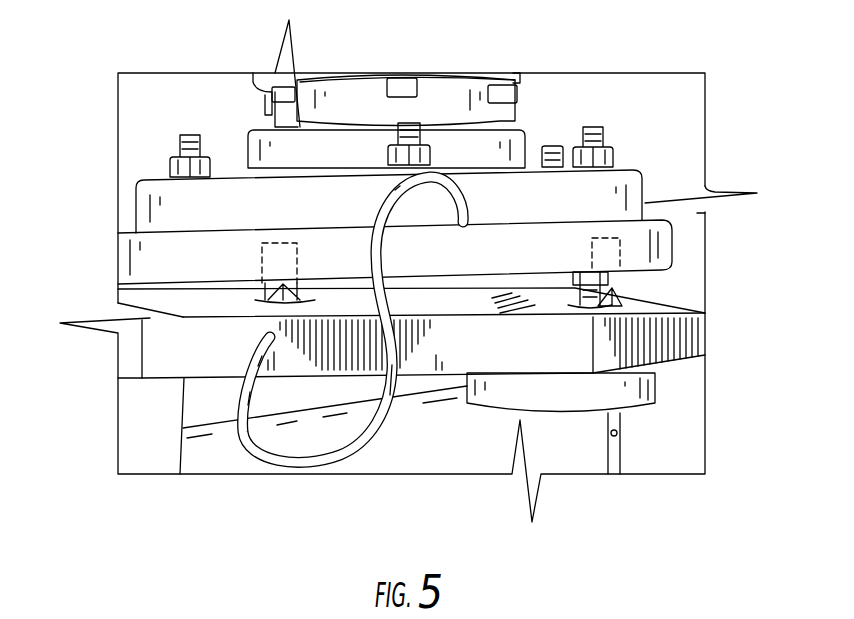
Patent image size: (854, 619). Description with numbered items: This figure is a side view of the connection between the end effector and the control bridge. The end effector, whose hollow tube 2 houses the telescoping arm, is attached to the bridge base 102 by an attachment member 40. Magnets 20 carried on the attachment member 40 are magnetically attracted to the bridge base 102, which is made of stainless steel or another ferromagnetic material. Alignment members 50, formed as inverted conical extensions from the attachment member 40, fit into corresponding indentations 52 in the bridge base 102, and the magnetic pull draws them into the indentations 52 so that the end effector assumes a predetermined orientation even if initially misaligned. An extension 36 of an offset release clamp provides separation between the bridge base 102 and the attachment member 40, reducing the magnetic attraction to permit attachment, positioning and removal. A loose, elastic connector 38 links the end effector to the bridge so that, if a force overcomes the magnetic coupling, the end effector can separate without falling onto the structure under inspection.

The tube 2 is at (197, 467).
The magnets 20 is at (630, 386).
The extension 36 is at (617, 280).
The connector 38 is at (333, 463).
The attachment member 40 is at (170, 347).
The alignment members 50 is at (606, 298).
The indentations 52 is at (612, 238).
The base 102 is at (222, 267).